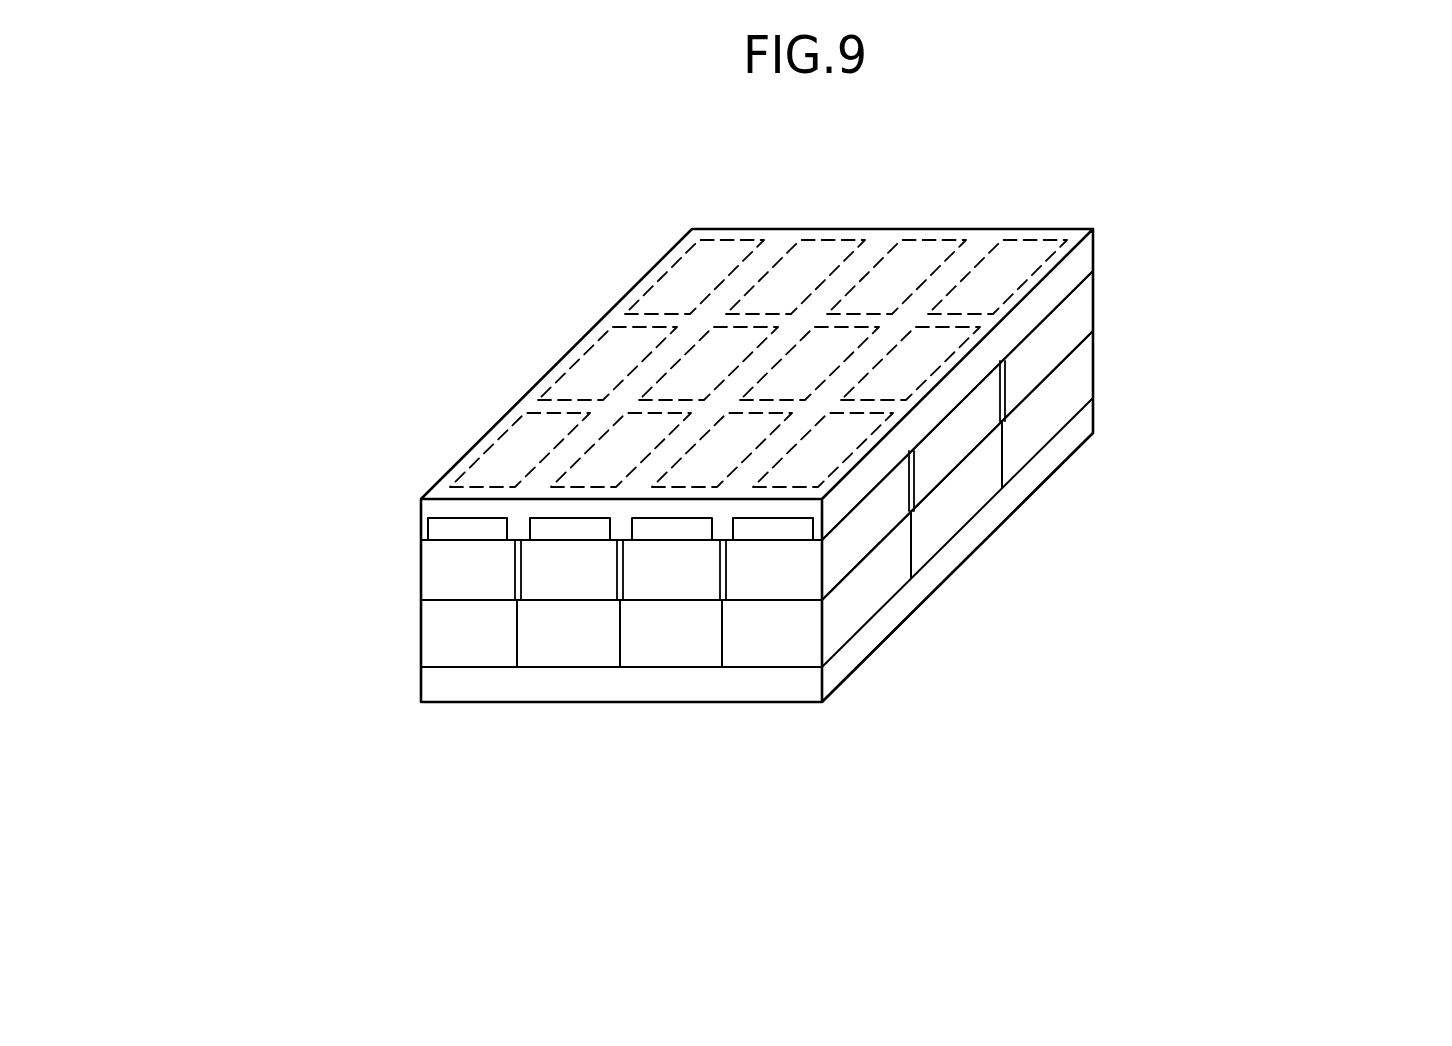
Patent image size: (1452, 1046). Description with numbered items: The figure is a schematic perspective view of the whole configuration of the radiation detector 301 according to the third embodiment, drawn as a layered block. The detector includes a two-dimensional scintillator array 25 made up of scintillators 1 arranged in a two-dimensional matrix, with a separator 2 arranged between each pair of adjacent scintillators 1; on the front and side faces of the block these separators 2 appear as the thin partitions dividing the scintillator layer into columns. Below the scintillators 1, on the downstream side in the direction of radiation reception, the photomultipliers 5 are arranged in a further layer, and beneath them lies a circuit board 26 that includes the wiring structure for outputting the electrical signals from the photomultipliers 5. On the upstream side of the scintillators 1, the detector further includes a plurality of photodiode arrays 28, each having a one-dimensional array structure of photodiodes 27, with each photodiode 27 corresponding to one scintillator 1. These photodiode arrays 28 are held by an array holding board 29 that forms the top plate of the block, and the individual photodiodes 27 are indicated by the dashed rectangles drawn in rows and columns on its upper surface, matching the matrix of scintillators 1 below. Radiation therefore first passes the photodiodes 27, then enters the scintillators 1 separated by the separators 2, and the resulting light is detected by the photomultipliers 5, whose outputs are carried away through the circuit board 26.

The radiation detector 301 is at (1154, 127).
The photodiode 27 is at (930, 242).
The scintillator 1 is at (1083, 314).
The array holding board 29 is at (433, 510).
The photodiode array 28 is at (450, 531).
The two-dimensional scintillator array 25 is at (421, 578).
The separator 2 is at (1003, 384).
The photomultiplier 5 is at (936, 532).
The circuit board 26 is at (640, 683).